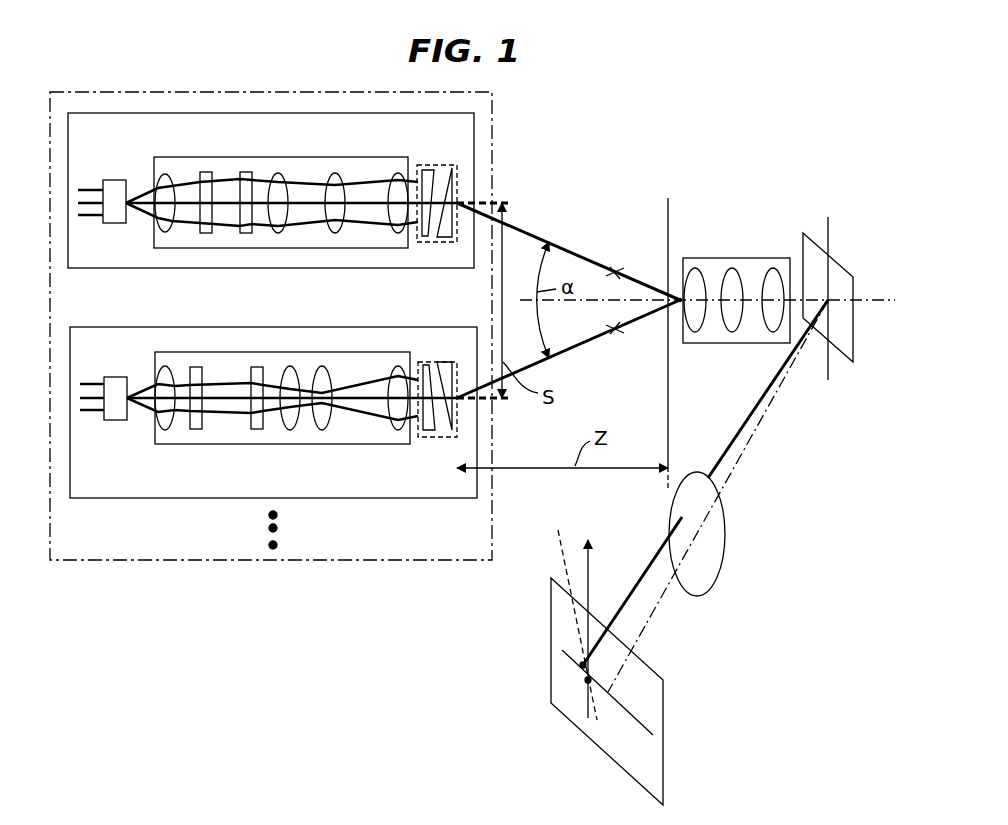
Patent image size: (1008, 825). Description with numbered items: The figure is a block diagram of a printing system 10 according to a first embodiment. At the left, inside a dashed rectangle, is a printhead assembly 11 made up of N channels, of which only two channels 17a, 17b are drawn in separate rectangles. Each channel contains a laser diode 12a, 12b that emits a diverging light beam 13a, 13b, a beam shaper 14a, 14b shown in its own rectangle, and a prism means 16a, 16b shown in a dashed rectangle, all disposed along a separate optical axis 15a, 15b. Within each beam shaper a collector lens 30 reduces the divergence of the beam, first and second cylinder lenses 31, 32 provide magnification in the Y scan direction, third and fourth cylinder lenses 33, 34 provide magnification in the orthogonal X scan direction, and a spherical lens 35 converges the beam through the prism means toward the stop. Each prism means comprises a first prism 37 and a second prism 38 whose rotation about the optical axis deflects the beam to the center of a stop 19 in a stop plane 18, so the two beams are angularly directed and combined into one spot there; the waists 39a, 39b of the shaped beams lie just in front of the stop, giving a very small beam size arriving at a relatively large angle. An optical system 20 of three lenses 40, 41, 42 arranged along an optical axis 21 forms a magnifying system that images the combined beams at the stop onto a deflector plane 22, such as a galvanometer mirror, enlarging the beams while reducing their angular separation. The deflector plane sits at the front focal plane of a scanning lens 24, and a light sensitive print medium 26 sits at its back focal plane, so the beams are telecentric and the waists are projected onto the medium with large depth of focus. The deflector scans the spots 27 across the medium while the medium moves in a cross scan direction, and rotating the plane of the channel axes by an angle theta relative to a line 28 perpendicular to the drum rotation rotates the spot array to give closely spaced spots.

The printing system 10 is at (619, 158).
The printhead assembly 11 is at (282, 92).
The first laser diode 12a is at (105, 180).
The second laser diode 12b is at (115, 422).
The first diverging light beam 13a is at (142, 195).
The second diverging light beam 13b is at (150, 385).
The first beam shaper 14a is at (280, 158).
The second beam shaper 14b is at (277, 445).
The first optical axis 15a is at (487, 198).
The second optical axis 15b is at (490, 400).
The first prism means 16a is at (437, 165).
The second prism means 16b is at (420, 437).
The first channel 17a is at (130, 270).
The second channel 17b is at (147, 498).
The stop plane 18 is at (667, 213).
The stop 19 is at (667, 318).
The optical system 20 is at (730, 258).
The optical axis of the optical system 21 is at (650, 300).
The deflector plane 22 is at (838, 262).
The scanning lens 24 is at (712, 565).
The light sensitive print medium 26 is at (663, 723).
The spots 27 is at (586, 680).
The line perpendicular to the rotation of the drum 28 is at (588, 578).
The collector lens 30 is at (165, 232).
The first cylinder lens 31 is at (206, 233).
The second cylinder lens 32 is at (246, 233).
The third cylinder lens 33 is at (280, 233).
The fourth cylinder lens 34 is at (337, 233).
The spherical lens 35 is at (397, 233).
The first prism 37 is at (426, 218).
The second prism 38 is at (450, 225).
The waist of first shaped light beam 39a is at (615, 270).
The waist of second shaped light beam 39b is at (615, 330).
The lens 40 is at (697, 278).
The lens 41 is at (732, 330).
The lens 42 is at (770, 320).